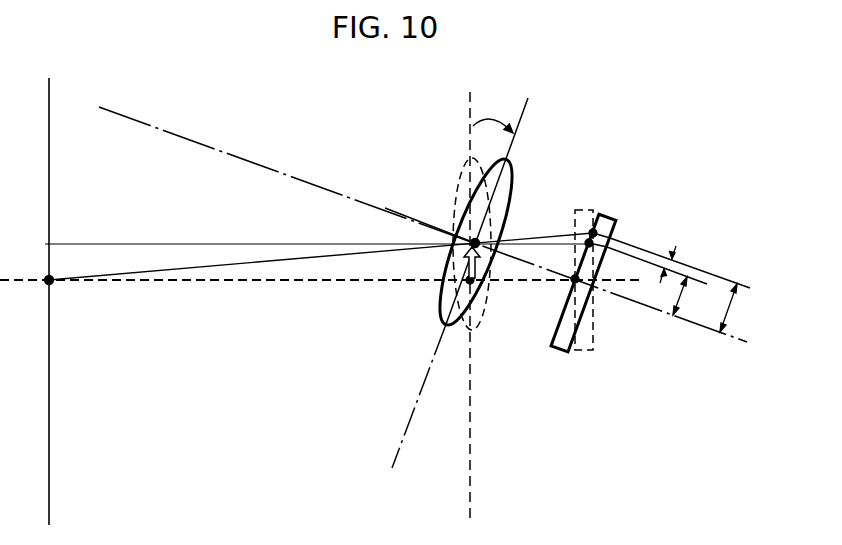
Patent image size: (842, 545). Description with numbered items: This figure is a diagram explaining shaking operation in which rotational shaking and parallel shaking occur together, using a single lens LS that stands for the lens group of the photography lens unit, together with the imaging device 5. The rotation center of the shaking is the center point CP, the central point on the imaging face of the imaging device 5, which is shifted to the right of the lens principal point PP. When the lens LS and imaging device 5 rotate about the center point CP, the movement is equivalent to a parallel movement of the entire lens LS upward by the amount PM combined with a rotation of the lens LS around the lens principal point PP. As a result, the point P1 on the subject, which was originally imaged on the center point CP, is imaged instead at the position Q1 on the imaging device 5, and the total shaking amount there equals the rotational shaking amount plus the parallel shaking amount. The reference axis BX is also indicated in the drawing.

The imaging device 5 is at (607, 215).
The point on a subject P1 is at (37, 292).
The base axis BX is at (228, 282).
The lens LS is at (509, 161).
The lens principal point PP is at (455, 210).
The parallel movement amount PM is at (468, 254).
The imaging position after synthesized movement Q1 is at (593, 233).
The center point of the imaging device CP is at (575, 279).